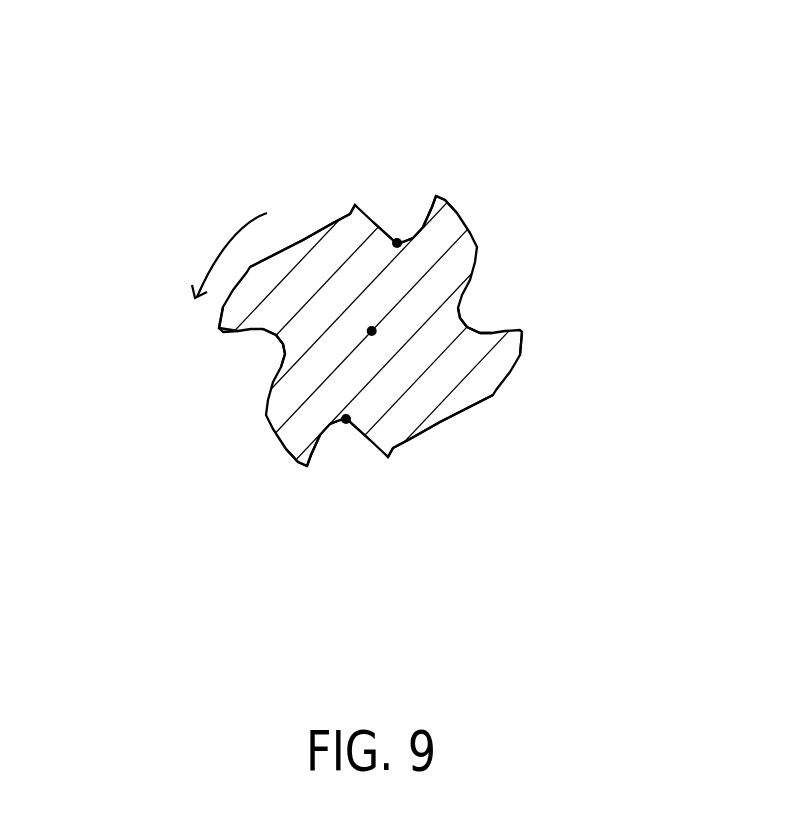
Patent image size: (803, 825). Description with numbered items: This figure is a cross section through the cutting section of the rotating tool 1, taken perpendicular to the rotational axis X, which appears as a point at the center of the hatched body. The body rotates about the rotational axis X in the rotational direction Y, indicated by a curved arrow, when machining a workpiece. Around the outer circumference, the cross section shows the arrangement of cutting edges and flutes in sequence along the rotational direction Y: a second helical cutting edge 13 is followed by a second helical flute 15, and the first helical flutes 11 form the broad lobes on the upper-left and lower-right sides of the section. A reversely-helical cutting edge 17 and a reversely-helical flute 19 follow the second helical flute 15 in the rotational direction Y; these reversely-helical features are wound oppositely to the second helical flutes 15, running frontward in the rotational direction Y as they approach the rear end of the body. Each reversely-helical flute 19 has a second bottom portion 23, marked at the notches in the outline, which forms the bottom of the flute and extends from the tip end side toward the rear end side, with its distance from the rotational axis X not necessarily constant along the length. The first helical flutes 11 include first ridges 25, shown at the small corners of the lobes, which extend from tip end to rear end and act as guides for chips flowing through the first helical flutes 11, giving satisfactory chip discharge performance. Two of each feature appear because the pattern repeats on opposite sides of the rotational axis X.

The rotating tool 1 is at (193, 148).
The first helical flute 11 is at (302, 233).
The second helical cutting edge 13 is at (219, 328).
The second helical flute 15 is at (267, 337).
The reversely-helical cutting edge 17 is at (436, 198).
The reversely-helical flute 19 is at (408, 240).
The second bottom portion 23 is at (395, 241).
The first ridge 25 is at (353, 207).
The rotational axis X is at (372, 331).
The rotational direction Y is at (227, 255).